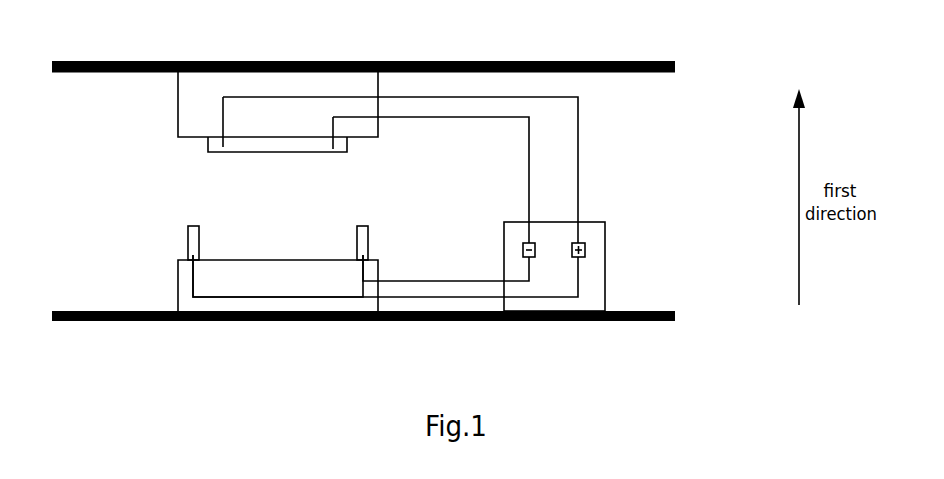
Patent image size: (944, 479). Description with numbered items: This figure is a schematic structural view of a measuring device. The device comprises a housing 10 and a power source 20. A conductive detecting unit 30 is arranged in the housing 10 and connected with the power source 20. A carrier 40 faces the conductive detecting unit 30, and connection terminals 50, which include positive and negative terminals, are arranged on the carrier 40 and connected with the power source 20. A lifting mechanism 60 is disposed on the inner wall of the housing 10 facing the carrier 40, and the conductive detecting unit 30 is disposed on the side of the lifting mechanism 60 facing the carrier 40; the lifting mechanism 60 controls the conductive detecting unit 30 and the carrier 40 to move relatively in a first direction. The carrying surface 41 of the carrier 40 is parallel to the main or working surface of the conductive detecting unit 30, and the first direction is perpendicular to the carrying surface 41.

The housing 10 is at (647, 72).
The power source 20 is at (605, 288).
The conductive detecting unit 30 is at (217, 144).
The carrier 40 is at (187, 295).
The carrying surface 41 is at (290, 260).
The connection terminals 50 is at (192, 243).
The lifting mechanism 60 is at (187, 97).